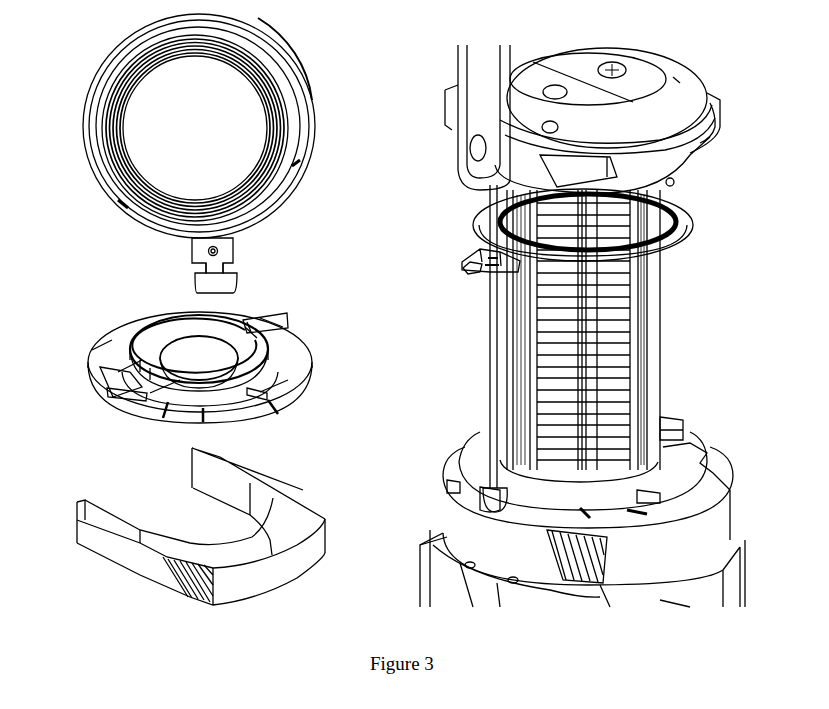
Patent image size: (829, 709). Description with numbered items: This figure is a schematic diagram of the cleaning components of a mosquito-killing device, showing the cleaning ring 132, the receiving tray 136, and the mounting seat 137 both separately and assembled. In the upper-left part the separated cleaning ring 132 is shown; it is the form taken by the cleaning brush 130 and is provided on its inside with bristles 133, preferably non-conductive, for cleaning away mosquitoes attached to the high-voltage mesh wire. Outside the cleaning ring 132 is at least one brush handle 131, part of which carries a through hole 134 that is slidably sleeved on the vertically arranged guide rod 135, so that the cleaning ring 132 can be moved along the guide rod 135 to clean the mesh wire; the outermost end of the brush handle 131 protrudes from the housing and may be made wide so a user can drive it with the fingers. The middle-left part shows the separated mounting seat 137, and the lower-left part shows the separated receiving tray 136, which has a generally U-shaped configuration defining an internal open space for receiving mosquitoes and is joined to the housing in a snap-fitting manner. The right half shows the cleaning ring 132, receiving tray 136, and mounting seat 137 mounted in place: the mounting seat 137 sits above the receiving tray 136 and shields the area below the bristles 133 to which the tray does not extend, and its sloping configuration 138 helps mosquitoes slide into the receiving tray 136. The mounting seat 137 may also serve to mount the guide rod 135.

The cleaning brush 130 is at (415, 310).
The brush handle 131 is at (237, 279).
The cleaning ring 132 is at (473, 230).
The bristles 133 is at (475, 224).
The through hole 134 is at (222, 253).
The guide rod 135 is at (490, 380).
The receiving tray 136 is at (530, 547).
The mounting seat 137 is at (487, 470).
The sloping configuration 138 is at (153, 318).